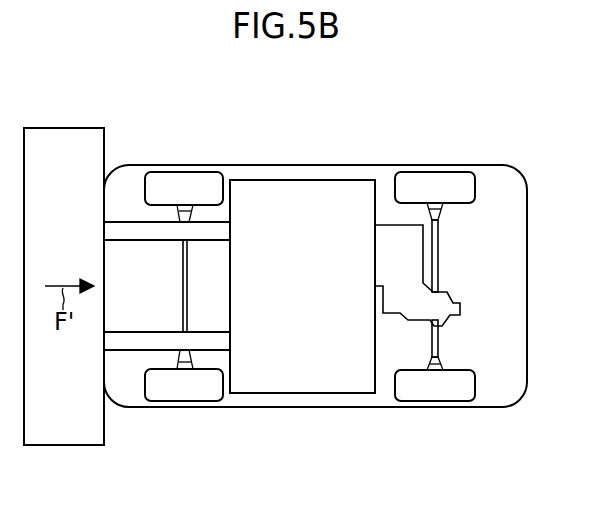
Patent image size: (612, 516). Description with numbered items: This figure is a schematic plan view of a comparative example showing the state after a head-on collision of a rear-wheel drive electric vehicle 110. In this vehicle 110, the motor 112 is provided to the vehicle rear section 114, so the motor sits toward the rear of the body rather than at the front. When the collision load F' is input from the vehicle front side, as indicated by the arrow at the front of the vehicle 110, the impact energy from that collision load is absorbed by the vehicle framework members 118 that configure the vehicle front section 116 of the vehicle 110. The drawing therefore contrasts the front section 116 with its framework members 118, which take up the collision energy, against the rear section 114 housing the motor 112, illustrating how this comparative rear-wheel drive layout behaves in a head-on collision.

The rear-wheel drive electric vehicle 110 is at (328, 227).
The motor 112 is at (410, 299).
The vehicle rear section 114 is at (435, 252).
The vehicle front section 116 is at (185, 252).
The vehicle framework members 118 is at (213, 233).